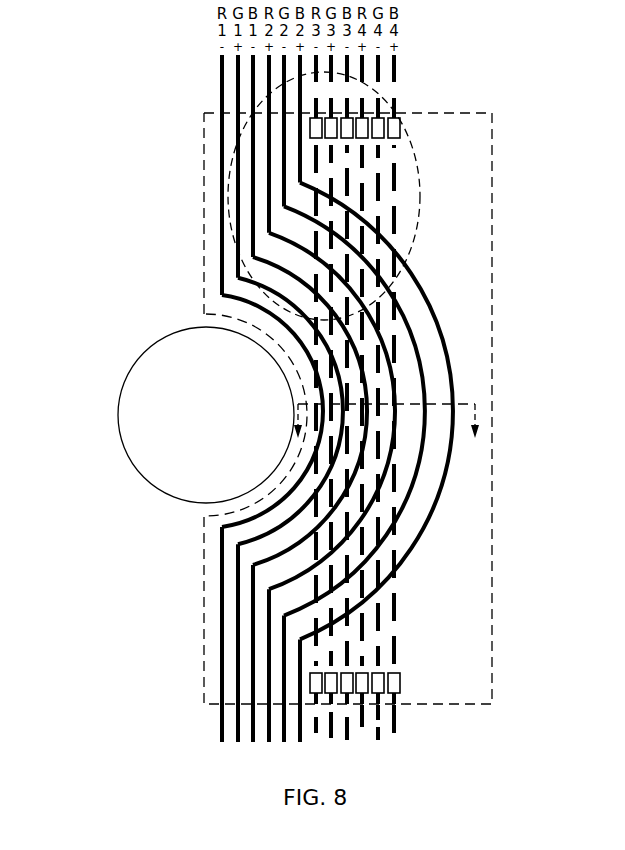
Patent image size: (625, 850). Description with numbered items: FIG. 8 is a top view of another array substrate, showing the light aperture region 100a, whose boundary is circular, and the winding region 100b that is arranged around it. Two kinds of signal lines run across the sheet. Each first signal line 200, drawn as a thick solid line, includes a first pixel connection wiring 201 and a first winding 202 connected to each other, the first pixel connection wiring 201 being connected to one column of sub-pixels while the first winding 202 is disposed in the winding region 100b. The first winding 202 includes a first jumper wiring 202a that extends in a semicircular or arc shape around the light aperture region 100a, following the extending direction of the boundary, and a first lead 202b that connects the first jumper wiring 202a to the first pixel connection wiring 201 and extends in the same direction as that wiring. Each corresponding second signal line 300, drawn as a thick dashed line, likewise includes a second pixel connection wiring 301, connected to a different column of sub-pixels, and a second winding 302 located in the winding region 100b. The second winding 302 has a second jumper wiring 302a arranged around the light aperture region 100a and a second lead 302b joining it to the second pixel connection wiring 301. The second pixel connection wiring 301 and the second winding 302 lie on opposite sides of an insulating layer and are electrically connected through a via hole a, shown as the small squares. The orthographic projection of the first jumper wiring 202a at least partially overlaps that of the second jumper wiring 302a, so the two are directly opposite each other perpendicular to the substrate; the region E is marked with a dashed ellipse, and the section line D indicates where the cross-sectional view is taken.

The light aperture region 100a is at (145, 356).
The winding region 100b is at (492, 338).
The first signal line 200 is at (68, 52).
The first pixel connection wiring 201 is at (222, 104).
The first winding 202 is at (126, 180).
The first jumper wiring 202a is at (245, 305).
The first lead 202b is at (222, 230).
The second signal line 300 is at (543, 32).
The second pixel connection wiring 301 is at (397, 75).
The second winding 302 is at (491, 153).
The second jumper wiring 302a is at (392, 292).
The second lead 302b is at (394, 202).
The via hole a is at (400, 121).
The region E is at (382, 100).
The section line D-D' D is at (378, 434).